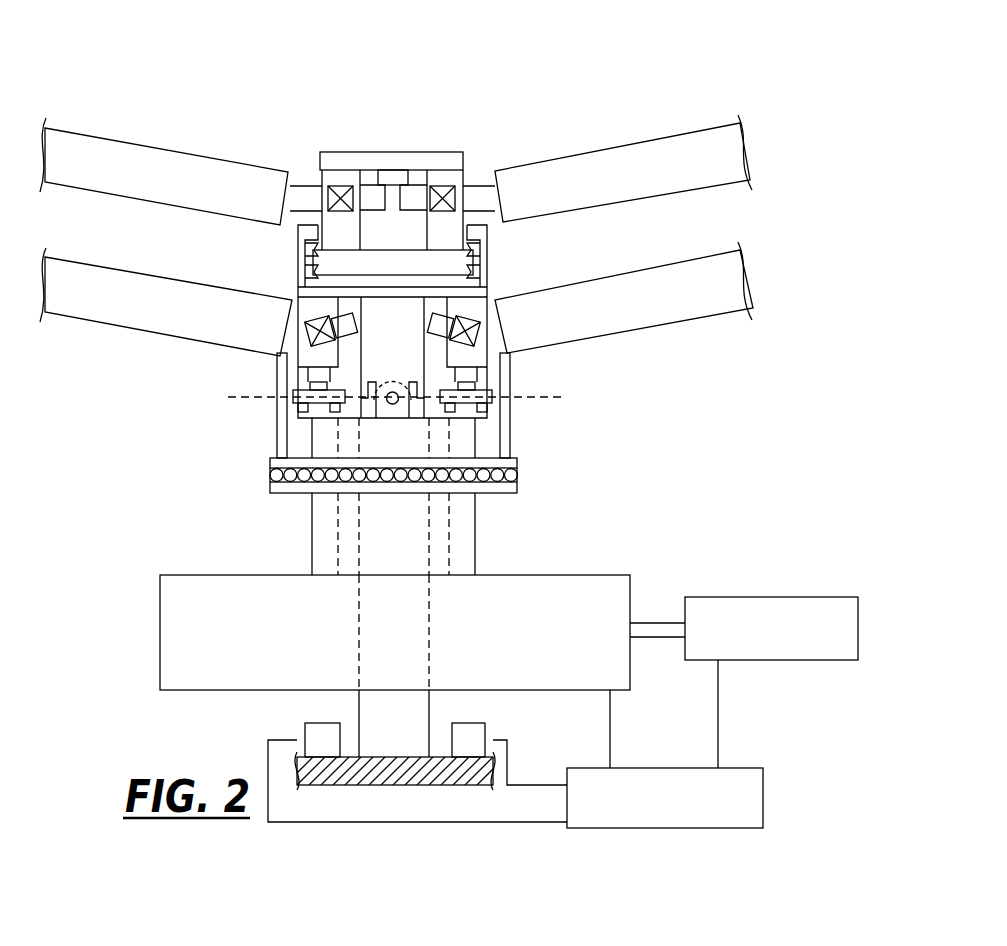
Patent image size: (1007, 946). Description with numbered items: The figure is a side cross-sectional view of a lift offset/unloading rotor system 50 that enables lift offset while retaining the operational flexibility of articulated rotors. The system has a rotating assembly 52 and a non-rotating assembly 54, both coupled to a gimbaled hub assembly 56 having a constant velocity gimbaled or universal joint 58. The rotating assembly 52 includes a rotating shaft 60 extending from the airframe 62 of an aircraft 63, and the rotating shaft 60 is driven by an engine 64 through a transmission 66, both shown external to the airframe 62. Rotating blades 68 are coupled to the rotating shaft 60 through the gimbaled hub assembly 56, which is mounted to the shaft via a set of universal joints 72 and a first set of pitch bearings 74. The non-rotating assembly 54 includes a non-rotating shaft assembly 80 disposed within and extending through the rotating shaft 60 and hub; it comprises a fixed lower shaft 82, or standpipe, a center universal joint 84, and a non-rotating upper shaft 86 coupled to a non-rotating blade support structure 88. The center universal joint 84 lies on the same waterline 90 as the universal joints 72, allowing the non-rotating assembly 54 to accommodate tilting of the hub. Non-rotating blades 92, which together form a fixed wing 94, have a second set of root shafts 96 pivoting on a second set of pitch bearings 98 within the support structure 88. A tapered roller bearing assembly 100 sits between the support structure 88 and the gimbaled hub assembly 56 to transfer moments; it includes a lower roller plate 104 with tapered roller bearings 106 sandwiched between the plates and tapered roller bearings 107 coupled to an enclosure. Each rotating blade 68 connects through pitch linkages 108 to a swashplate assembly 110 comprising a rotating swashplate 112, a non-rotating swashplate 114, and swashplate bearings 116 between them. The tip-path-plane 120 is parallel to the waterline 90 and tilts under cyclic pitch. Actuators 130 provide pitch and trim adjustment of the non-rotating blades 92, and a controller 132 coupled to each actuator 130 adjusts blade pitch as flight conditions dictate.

The lift offset/unloading rotor system 50 is at (616, 104).
The rotating assembly 52 is at (298, 297).
The non-rotating assembly 54 is at (466, 152).
The gimbaled hub assembly 56 is at (488, 255).
The constant velocity gimbaled or universal joint 58 is at (514, 385).
The rotating shaft 60 is at (477, 548).
The airframe 62 is at (353, 772).
The aircraft 63 is at (320, 757).
The engine 64 is at (748, 661).
The transmission 66 is at (535, 692).
The rotating blades 68 is at (134, 330).
The set of universal joints 72 is at (286, 358).
The first set of pitch bearings 74 is at (448, 318).
The non-rotating shaft assembly 80 is at (358, 540).
The fixed lower shaft 82 is at (430, 525).
The center universal joint 84 is at (436, 405).
The non-rotating upper shaft 86 is at (382, 362).
The non-rotating blade support structure 88 is at (407, 152).
The waterline 90 is at (290, 398).
The non-rotating blades 92 is at (141, 145).
The fixed wing 94 is at (752, 180).
The second set of root shafts 96 is at (370, 214).
The second set of pitch bearings 98 is at (342, 186).
The tapered roller bearing assembly 100 is at (350, 252).
The lower roller plate 104 is at (490, 288).
The tapered roller bearings 106 is at (305, 272).
The tapered roller bearings 107 is at (298, 240).
The pitch linkages 108 is at (277, 432).
The swashplate assembly 110 is at (517, 458).
The rotating swashplate 112 is at (270, 465).
The non-rotating swashplate 114 is at (283, 493).
The swashplate bearings 116 is at (517, 475).
The tip-path-plane 120 is at (278, 354).
The actuators 130 is at (376, 184).
The controller 132 is at (695, 768).